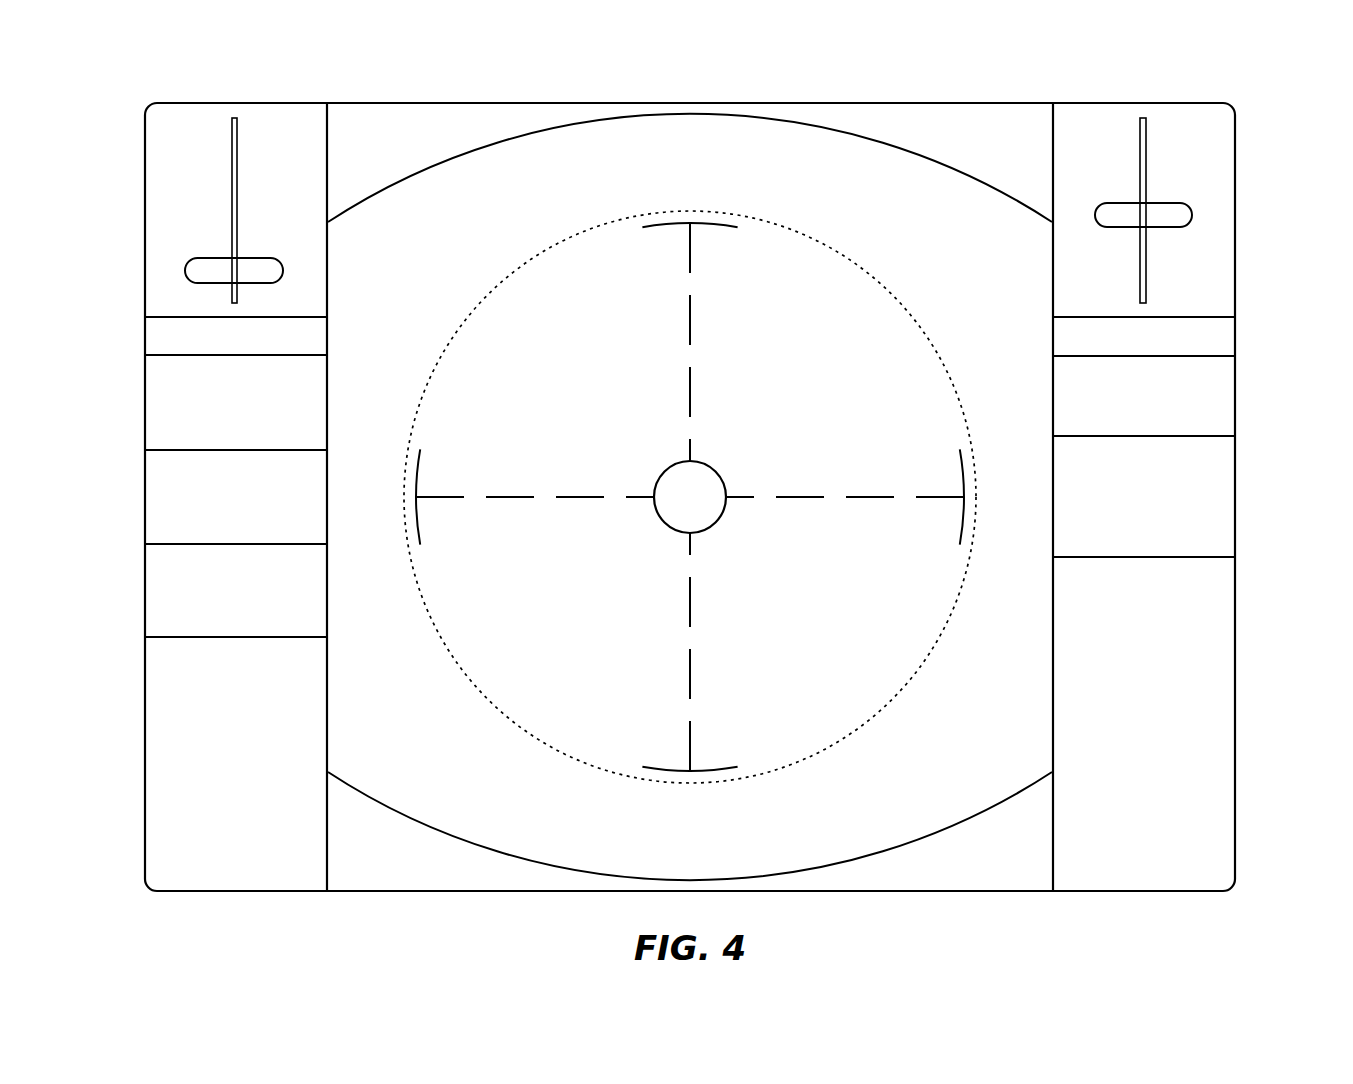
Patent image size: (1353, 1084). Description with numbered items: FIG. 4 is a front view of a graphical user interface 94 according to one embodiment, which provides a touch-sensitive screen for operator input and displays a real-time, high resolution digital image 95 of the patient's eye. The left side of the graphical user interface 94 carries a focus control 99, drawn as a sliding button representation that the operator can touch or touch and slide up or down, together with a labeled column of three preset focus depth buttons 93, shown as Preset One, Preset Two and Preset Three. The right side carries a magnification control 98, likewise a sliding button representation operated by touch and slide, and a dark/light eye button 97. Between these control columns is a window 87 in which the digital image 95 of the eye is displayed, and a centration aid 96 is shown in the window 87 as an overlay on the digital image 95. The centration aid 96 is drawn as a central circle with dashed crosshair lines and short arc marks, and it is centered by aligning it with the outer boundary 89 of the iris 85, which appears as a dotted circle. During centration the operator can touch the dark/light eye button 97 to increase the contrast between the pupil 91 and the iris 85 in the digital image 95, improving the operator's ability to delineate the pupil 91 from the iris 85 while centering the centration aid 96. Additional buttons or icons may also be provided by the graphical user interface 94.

The graphical user interface 94 is at (1268, 70).
The focus control 99 is at (128, 222).
The preset focus depth buttons 93 is at (144, 405).
The magnification control 98 is at (1247, 233).
The dark/light eye button 97 is at (1236, 523).
The digital image 95 is at (527, 237).
The window 87 is at (375, 873).
The outer boundary of the iris 89 is at (940, 676).
The iris 85 is at (455, 362).
The centration aid 96 is at (710, 222).
The pupil 91 is at (658, 477).